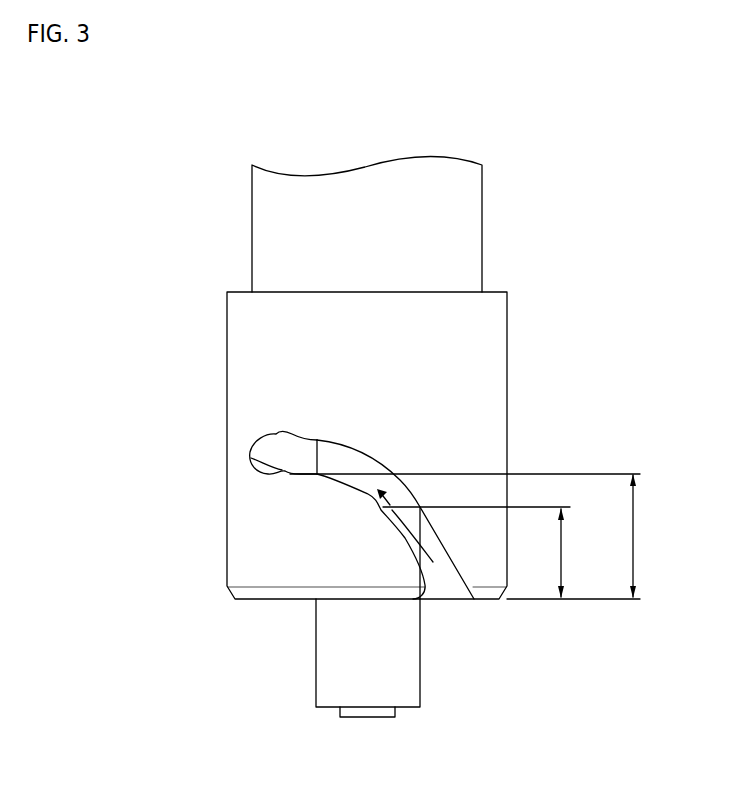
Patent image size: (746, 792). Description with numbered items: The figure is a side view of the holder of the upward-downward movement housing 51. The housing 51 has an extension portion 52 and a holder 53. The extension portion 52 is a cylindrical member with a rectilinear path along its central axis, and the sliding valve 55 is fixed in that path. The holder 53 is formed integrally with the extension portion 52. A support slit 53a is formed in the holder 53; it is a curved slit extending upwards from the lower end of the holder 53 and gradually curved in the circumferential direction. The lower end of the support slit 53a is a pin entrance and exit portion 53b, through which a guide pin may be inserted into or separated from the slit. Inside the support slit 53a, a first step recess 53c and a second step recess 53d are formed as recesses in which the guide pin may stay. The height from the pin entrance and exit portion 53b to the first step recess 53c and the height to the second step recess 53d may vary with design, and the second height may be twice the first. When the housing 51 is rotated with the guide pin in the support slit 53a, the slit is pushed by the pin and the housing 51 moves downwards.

The upward-downward movement housing 51 is at (128, 243).
The extension portion 52 is at (468, 225).
The holder 53 is at (213, 379).
The support slit 53a is at (335, 462).
The pin entrance and exit portion 53b is at (444, 588).
The first step recess 53c is at (365, 489).
The second step recess 53d is at (249, 461).
The sliding valve 55 is at (325, 652).